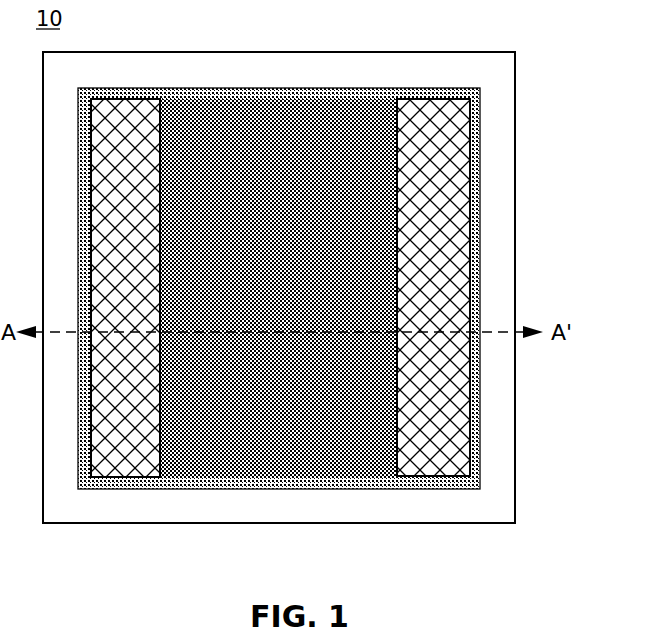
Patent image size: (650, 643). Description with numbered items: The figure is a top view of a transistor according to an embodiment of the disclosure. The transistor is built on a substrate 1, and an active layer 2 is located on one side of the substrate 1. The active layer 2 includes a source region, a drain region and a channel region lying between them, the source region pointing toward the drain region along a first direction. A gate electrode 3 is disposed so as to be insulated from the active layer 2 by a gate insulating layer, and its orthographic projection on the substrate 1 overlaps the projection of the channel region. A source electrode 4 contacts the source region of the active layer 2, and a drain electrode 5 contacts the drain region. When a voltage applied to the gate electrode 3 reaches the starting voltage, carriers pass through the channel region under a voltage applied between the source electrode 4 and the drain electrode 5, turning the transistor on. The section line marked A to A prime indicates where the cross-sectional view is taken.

The substrate 1 is at (515, 168).
The active layer 2 is at (480, 228).
The gate electrode 3 is at (480, 288).
The source electrode 4 is at (137, 477).
The drain electrode 5 is at (430, 476).